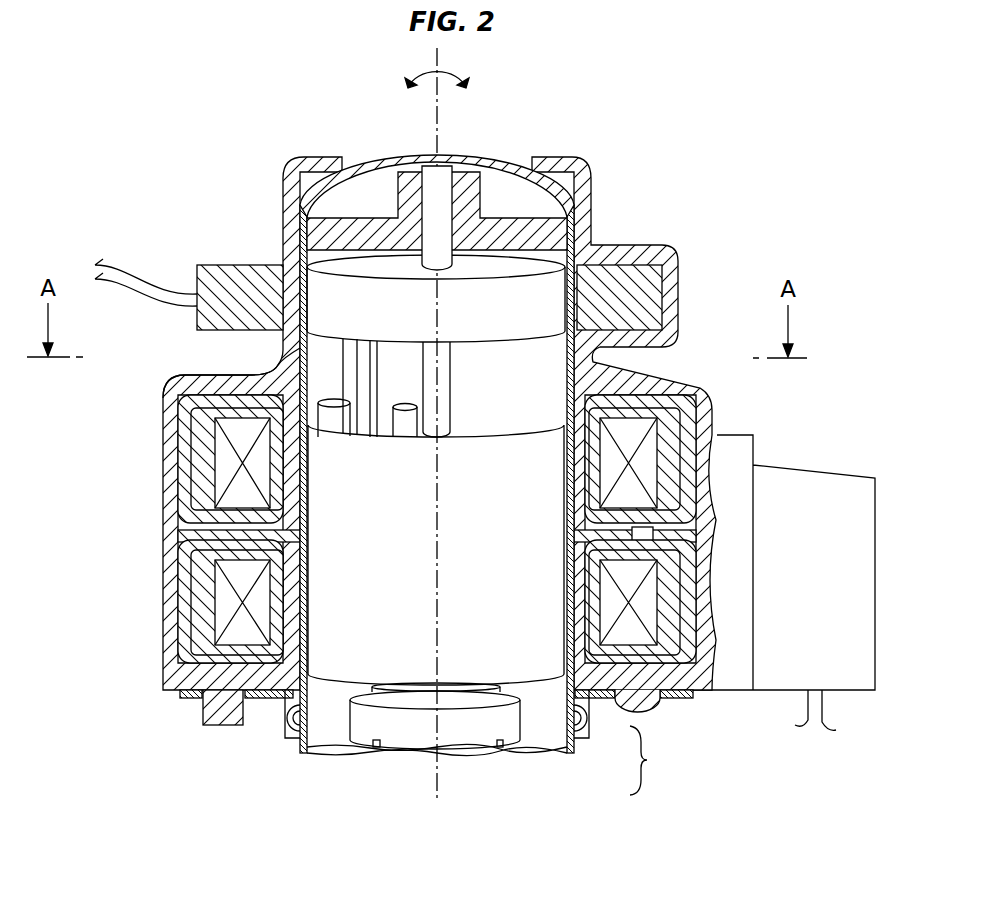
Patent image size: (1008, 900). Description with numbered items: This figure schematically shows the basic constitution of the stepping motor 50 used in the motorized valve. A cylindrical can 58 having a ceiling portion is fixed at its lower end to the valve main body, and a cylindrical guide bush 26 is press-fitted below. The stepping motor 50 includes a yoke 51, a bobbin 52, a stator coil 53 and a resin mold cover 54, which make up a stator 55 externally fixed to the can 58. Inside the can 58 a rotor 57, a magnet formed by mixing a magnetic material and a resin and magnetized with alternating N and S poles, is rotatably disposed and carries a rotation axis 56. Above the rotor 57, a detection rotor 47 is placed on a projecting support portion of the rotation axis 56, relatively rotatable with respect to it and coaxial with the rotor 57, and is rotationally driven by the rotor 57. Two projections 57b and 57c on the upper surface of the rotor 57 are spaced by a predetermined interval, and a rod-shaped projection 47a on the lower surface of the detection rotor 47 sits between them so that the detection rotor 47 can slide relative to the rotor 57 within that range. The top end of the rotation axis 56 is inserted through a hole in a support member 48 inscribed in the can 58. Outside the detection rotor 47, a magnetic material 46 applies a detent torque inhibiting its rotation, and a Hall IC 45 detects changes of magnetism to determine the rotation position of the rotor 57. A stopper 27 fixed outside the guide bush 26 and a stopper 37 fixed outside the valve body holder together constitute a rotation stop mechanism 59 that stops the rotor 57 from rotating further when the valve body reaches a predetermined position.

The guide bush 26 is at (485, 754).
The stopper 27 is at (513, 730).
The stopper 37 is at (522, 690).
The Hall IC 45 is at (243, 266).
The magnetic material 46 is at (652, 298).
The detection rotor 47 is at (530, 264).
The rod-shaped projection 47a is at (367, 440).
The support member 48 is at (408, 176).
The stepping motor 50 is at (747, 171).
The yoke 51 is at (185, 534).
The bobbin 52 is at (190, 512).
The stator coil 53 is at (218, 462).
The resin mold cover 54 is at (215, 372).
The stator 55 is at (163, 382).
The rotation axis 56 is at (444, 166).
The rotor 57 is at (560, 577).
The projection 57b is at (330, 445).
The projection 57c is at (403, 442).
The can 58 is at (484, 156).
The rotation stop mechanism 59 is at (650, 760).